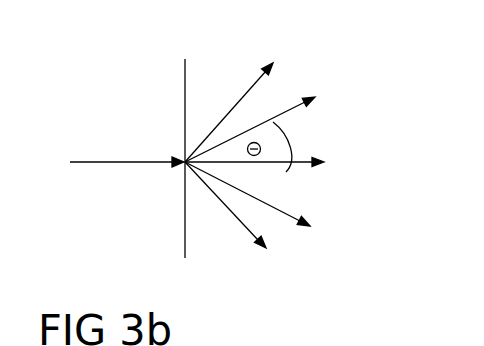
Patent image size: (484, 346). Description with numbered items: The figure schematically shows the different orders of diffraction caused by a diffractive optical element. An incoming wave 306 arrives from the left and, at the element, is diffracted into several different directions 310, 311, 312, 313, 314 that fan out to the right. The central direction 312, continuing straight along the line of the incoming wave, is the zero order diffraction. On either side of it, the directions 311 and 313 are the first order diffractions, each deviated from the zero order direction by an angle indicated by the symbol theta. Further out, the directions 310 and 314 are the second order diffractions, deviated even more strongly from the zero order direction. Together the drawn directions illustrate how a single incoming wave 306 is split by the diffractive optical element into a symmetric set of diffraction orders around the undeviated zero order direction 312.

The incoming wave 306 is at (118, 141).
The second order diffraction direction 310 is at (254, 99).
The first order diffraction direction 311 is at (274, 123).
The zero order diffraction direction 312 is at (279, 161).
The first order diffraction direction 313 is at (275, 197).
The second order diffraction direction 314 is at (239, 221).